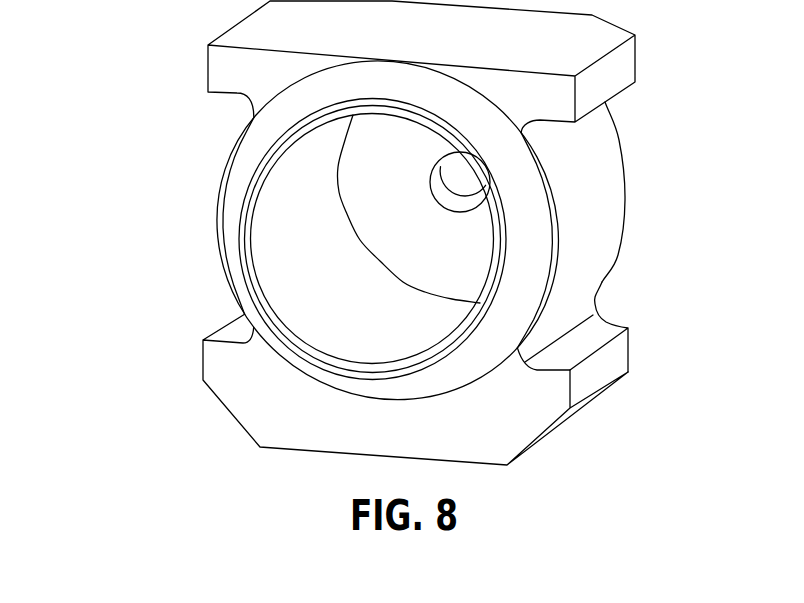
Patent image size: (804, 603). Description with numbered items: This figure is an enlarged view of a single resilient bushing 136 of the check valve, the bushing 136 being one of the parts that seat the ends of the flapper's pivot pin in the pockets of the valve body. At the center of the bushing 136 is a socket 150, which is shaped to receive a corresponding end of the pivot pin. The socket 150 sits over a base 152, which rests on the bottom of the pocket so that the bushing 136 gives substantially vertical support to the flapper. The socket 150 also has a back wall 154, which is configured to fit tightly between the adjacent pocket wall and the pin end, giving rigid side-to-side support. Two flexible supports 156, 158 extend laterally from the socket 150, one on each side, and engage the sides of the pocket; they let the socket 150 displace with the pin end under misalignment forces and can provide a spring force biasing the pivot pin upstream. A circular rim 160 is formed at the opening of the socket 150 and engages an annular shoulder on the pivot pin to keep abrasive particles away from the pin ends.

The bushing 136 is at (162, 57).
The socket 150 is at (273, 293).
The base 152 is at (542, 422).
The back wall 154 is at (380, 226).
The flexible support 156 is at (623, 343).
The flexible support 158 is at (626, 50).
The circular rim 160 is at (234, 194).